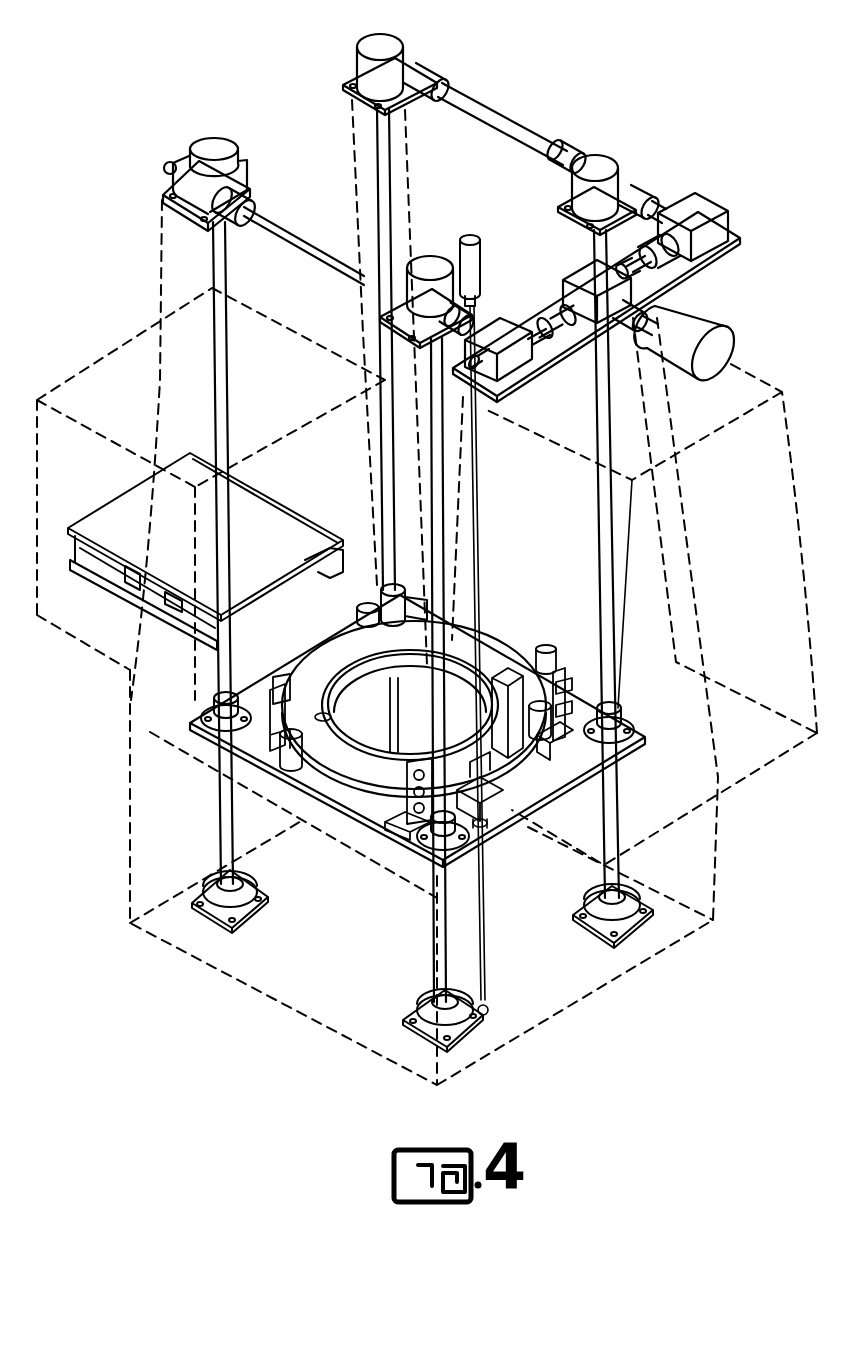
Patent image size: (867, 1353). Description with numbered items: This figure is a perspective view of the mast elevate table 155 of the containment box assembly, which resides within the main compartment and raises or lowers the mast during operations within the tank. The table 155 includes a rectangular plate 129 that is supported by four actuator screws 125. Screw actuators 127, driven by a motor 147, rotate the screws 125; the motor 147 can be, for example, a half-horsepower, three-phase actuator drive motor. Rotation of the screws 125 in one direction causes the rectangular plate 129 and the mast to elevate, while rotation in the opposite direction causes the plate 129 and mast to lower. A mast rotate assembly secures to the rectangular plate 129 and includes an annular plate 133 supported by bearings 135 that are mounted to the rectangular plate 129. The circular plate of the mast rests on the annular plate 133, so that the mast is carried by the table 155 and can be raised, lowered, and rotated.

The actuator screws 125 is at (222, 266).
The screw actuators 127 is at (220, 150).
The rectangular plate 129 is at (363, 800).
The annular plate 133 is at (333, 747).
The bearings 135 is at (617, 709).
The motor 147 is at (714, 344).
The mast elevate table 155 is at (641, 157).